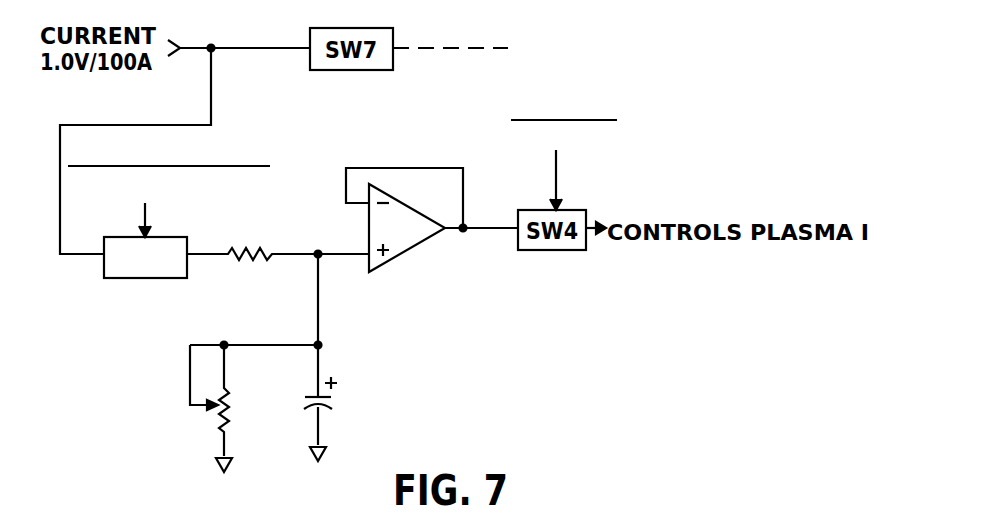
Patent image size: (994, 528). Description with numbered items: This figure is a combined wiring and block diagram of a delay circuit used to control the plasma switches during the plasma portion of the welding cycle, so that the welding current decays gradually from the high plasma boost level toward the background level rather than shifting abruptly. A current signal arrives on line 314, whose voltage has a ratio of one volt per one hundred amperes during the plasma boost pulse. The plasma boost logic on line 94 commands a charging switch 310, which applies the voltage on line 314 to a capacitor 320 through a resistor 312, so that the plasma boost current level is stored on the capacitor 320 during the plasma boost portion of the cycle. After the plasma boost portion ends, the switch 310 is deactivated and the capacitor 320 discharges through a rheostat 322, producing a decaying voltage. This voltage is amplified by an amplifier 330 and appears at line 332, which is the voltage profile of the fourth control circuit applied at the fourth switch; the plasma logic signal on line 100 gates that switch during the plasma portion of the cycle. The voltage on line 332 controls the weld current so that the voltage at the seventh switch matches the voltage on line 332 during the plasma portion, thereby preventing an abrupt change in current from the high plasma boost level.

The line 314 is at (211, 103).
The line 94 is at (145, 212).
The switch 310 is at (104, 262).
The resistor 312 is at (250, 258).
The amplifier 330 is at (392, 258).
The line 332 is at (485, 224).
The line 100 is at (557, 170).
The capacitor 320 is at (334, 400).
The rheostat 322 is at (226, 410).